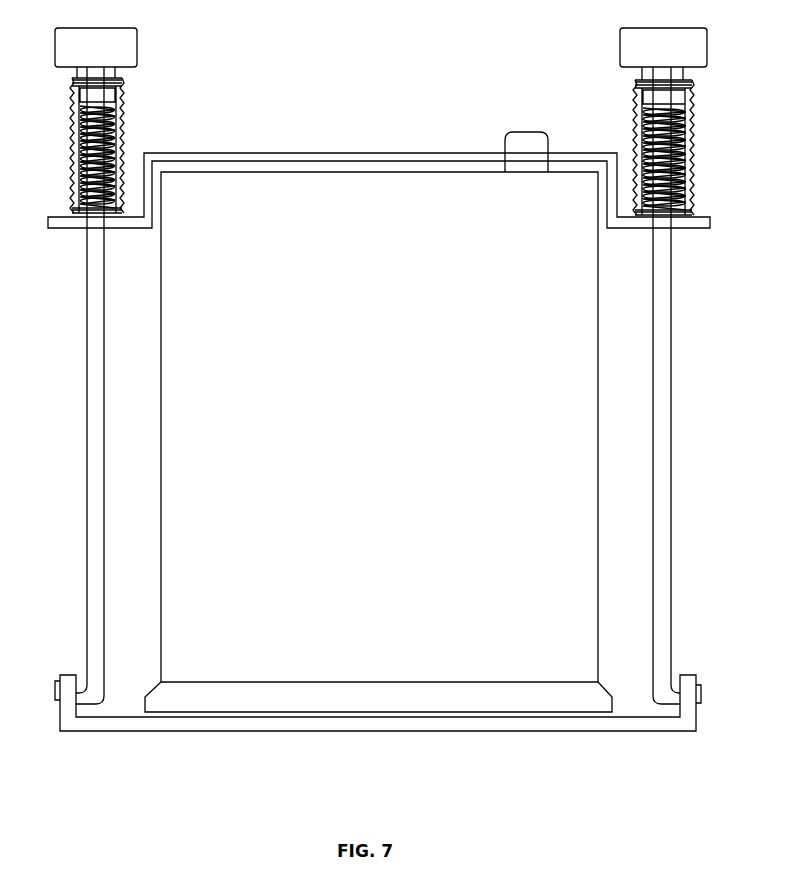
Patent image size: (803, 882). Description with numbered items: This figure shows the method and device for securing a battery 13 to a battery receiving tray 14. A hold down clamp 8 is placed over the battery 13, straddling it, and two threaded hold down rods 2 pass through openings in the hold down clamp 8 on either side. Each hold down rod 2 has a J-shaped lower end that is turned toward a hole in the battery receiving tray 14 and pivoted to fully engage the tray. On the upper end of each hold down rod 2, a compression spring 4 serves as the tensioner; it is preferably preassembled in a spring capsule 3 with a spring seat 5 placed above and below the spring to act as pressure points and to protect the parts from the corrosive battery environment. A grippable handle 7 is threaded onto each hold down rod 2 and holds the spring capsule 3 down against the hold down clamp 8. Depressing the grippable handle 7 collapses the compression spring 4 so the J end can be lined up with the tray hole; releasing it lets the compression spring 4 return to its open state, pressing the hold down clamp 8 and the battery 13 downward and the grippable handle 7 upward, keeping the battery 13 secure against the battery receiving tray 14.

The hold down rod 2 is at (87, 430).
The spring capsule 3 is at (72, 179).
The compression spring 4 is at (77, 148).
The spring seat 5 is at (72, 100).
The grippable handle 7 is at (62, 56).
The hold down clamp 8 is at (358, 153).
The battery 13 is at (358, 396).
The battery receiving tray 14 is at (360, 732).